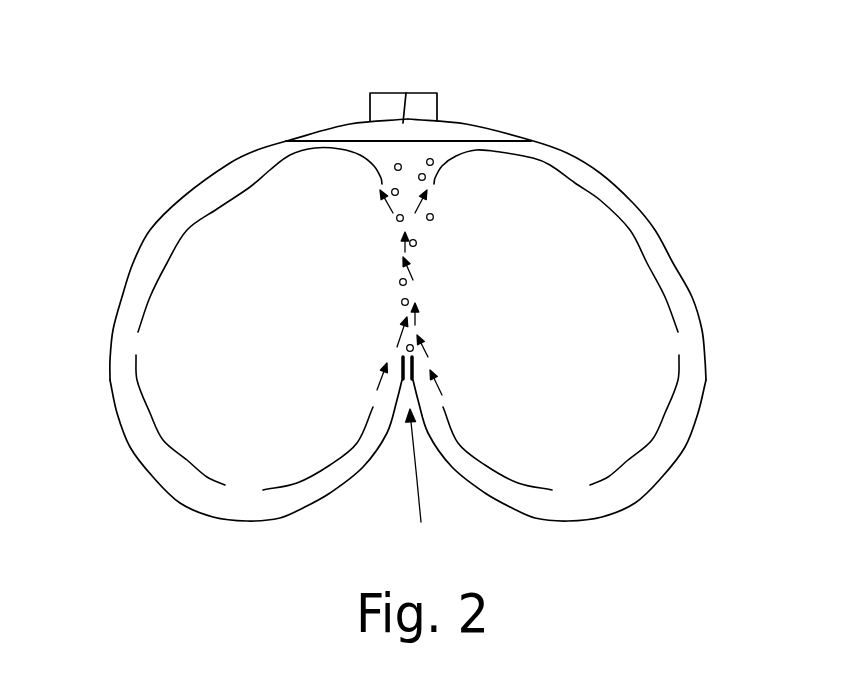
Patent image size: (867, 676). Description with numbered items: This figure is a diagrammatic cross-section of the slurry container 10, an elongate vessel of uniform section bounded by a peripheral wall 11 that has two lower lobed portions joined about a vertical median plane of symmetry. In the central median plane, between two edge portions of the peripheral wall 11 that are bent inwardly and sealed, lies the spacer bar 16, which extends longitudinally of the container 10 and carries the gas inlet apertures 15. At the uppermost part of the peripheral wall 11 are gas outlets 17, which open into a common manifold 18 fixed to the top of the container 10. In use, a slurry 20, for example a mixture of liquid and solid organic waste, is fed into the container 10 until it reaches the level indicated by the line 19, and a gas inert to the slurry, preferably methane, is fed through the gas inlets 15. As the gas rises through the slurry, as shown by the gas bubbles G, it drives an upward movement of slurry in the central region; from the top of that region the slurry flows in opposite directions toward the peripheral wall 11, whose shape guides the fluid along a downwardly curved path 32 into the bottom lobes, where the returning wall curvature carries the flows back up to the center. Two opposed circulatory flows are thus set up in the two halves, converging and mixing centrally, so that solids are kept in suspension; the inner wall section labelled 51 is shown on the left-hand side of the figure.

The slurry container 10 is at (141, 231).
The peripheral wall 11 is at (155, 479).
The gas inlet apertures 15 is at (422, 483).
The spacer bar 16 is at (414, 366).
The gas outlets 17 is at (407, 93).
The common manifold 18 is at (383, 93).
The slurry level line 19 is at (480, 141).
The slurry 20 is at (687, 414).
The downwardly curved path 32 is at (575, 184).
The left inner panel 51 is at (217, 209).
The gas bubbles G is at (434, 222).